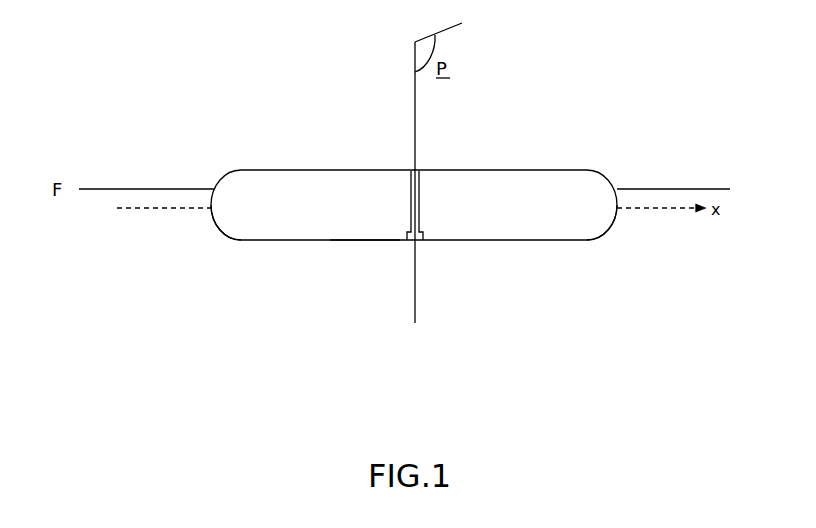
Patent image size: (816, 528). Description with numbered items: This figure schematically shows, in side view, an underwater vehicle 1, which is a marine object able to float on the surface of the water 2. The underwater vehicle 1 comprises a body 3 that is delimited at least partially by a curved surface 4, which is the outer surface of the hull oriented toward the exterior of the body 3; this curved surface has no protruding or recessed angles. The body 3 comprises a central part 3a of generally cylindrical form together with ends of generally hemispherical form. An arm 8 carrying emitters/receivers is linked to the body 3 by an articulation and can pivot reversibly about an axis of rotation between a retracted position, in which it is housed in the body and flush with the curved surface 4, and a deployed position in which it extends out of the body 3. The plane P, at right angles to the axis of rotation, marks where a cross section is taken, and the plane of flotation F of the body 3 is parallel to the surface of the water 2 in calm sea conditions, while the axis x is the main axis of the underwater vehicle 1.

The underwater vehicle 1 is at (419, 187).
The surface of the water 2 is at (131, 186).
The body 3 is at (290, 178).
The central part 3a is at (375, 228).
The curved surface 4 is at (278, 222).
The arm 8 is at (420, 242).